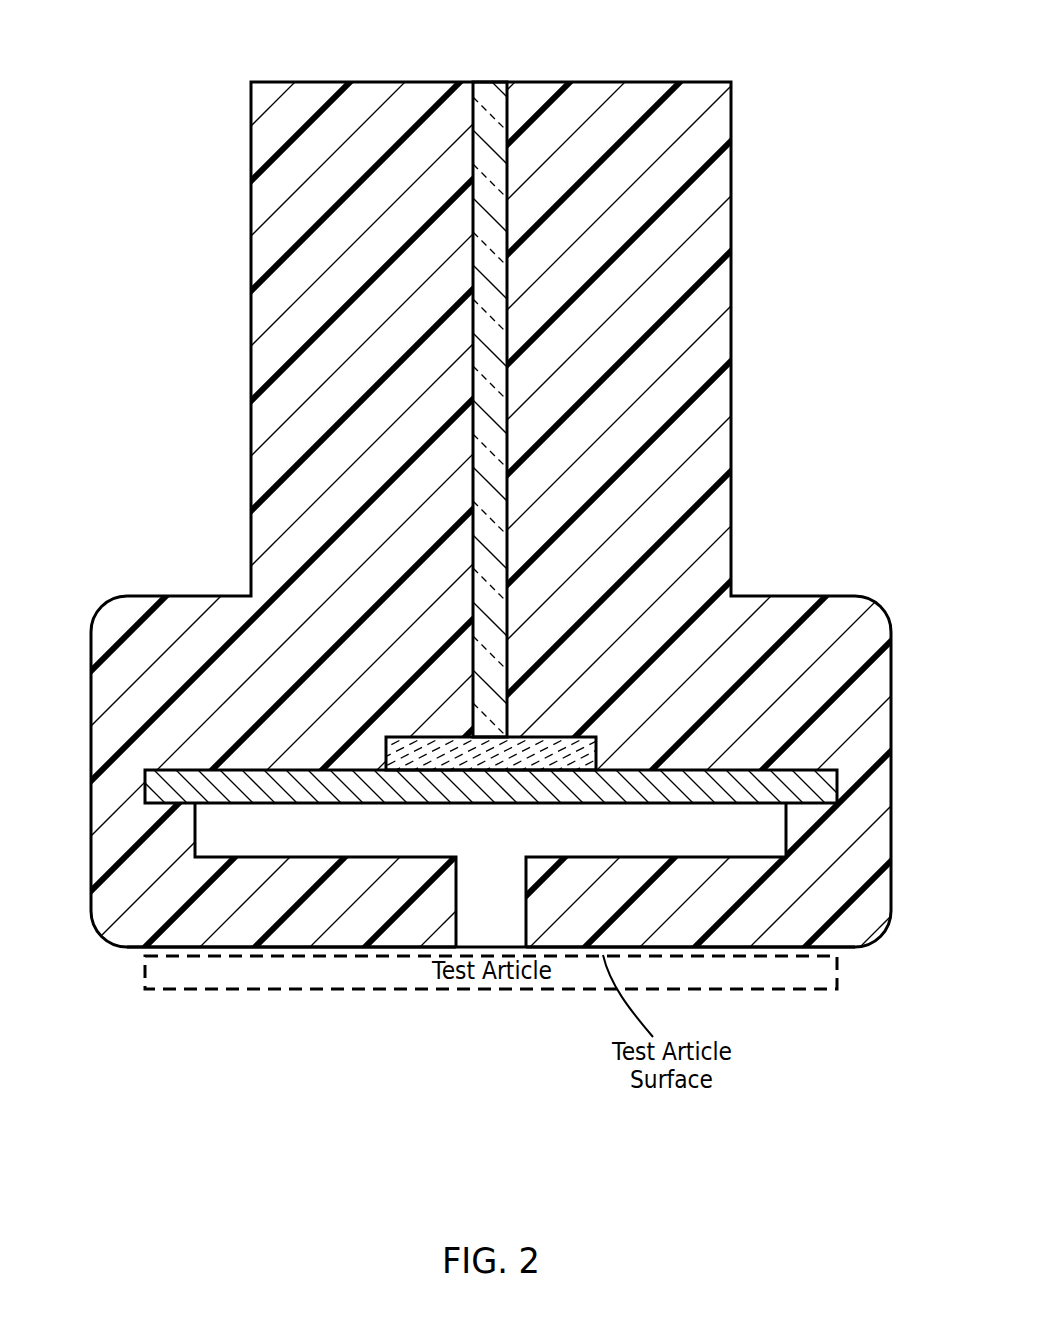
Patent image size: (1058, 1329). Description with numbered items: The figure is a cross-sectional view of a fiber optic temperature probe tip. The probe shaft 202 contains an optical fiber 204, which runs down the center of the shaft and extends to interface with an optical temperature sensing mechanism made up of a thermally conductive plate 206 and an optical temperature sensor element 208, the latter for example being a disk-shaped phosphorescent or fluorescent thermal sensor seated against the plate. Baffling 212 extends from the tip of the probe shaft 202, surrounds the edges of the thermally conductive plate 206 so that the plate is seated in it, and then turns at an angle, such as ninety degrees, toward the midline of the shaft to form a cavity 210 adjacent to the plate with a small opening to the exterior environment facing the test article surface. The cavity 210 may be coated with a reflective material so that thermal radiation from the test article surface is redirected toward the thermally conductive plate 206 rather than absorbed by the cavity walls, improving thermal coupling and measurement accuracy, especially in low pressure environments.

The probe shaft 202 is at (251, 190).
The optical fiber 204 is at (490, 82).
The thermally conductive plate 206 is at (837, 789).
The optical temperature sensor element 208 is at (387, 740).
The cavity 210 is at (767, 828).
The baffling 212 is at (143, 936).